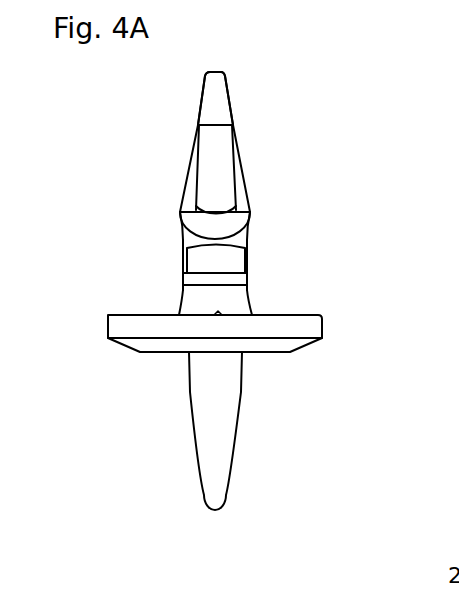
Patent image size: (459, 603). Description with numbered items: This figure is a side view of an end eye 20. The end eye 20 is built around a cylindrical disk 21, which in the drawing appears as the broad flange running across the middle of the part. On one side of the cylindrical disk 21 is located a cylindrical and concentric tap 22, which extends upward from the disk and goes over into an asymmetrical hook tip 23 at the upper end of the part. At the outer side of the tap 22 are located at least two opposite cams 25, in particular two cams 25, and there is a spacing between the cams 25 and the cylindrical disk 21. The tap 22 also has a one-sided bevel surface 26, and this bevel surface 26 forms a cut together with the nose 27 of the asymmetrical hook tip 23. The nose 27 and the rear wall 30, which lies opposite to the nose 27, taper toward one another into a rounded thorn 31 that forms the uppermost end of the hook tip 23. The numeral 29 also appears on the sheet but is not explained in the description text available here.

The end eye 20 is at (265, 202).
The cylindrical disk 21 is at (270, 323).
The tap 22 is at (108, 213).
The asymmetrical hook tip 23 is at (108, 73).
The cams 25 is at (216, 259).
The bevel surface 26 is at (222, 227).
The nose 27 is at (214, 178).
The rounded thorn 31 is at (215, 104).
The adjacent element 29 is at (458, 522).
The rear wall 30 is at (458, 595).